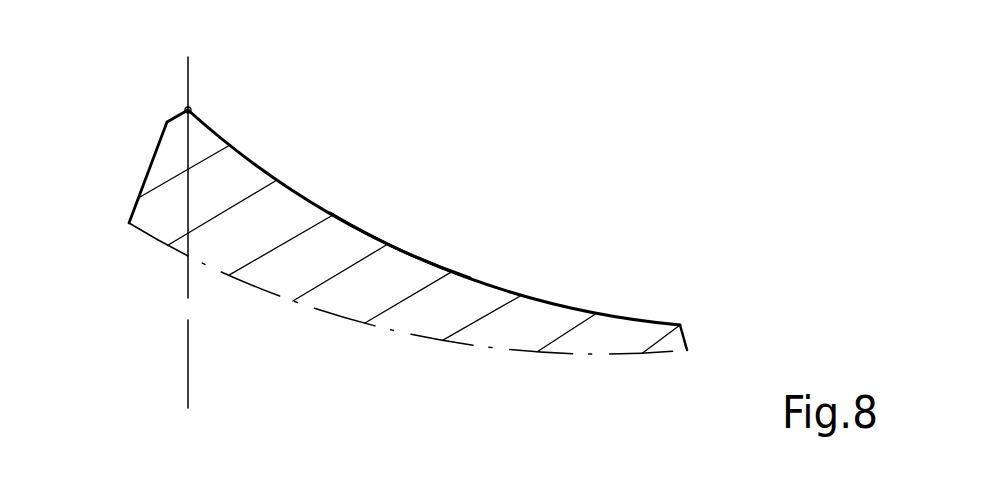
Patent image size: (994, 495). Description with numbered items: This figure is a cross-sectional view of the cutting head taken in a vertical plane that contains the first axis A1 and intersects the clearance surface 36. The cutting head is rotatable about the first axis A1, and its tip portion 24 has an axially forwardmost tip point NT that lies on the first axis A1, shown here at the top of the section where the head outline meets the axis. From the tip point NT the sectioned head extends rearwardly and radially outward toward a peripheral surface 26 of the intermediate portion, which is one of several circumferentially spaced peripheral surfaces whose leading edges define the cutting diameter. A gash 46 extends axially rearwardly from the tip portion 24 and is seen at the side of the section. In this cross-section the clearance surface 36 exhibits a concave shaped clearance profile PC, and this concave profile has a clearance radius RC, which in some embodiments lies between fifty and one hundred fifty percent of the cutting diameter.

The tip portion 24 is at (282, 173).
The peripheral surface 26 is at (689, 340).
The clearance surface 36 is at (578, 307).
The gash 46 is at (148, 172).
The forwardmost tip point NT is at (186, 109).
The concave shaped clearance profile PC is at (365, 226).
The clearance radius RC is at (430, 252).
The first axis A1 is at (189, 219).